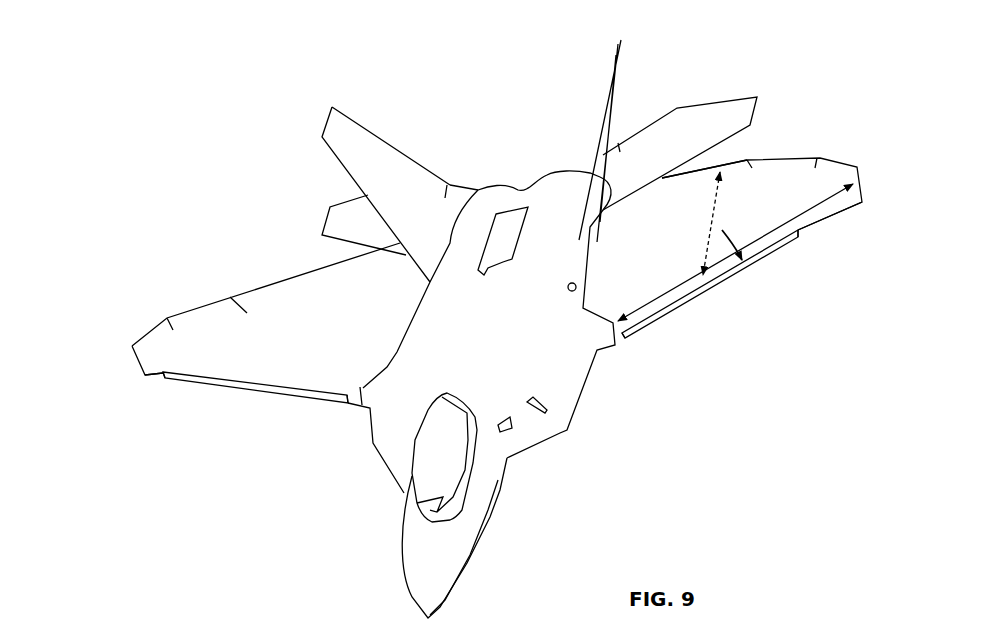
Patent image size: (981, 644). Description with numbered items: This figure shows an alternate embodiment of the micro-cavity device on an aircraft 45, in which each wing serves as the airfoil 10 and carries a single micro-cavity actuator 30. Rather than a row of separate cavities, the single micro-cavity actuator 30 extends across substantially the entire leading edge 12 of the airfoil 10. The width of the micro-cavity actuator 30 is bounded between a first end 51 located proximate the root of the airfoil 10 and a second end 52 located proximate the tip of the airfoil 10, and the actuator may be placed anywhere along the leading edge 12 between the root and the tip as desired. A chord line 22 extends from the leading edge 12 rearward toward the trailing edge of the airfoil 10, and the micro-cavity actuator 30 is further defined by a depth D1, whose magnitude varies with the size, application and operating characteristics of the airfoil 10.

The aircraft 45 is at (505, 118).
The airfoil 10 is at (202, 317).
The leading edge 12 is at (147, 375).
The chord line 22 is at (723, 187).
The micro-cavity actuator 30 is at (253, 397).
The first end 51 is at (348, 405).
The second end 52 is at (163, 373).
The depth D1 is at (748, 273).